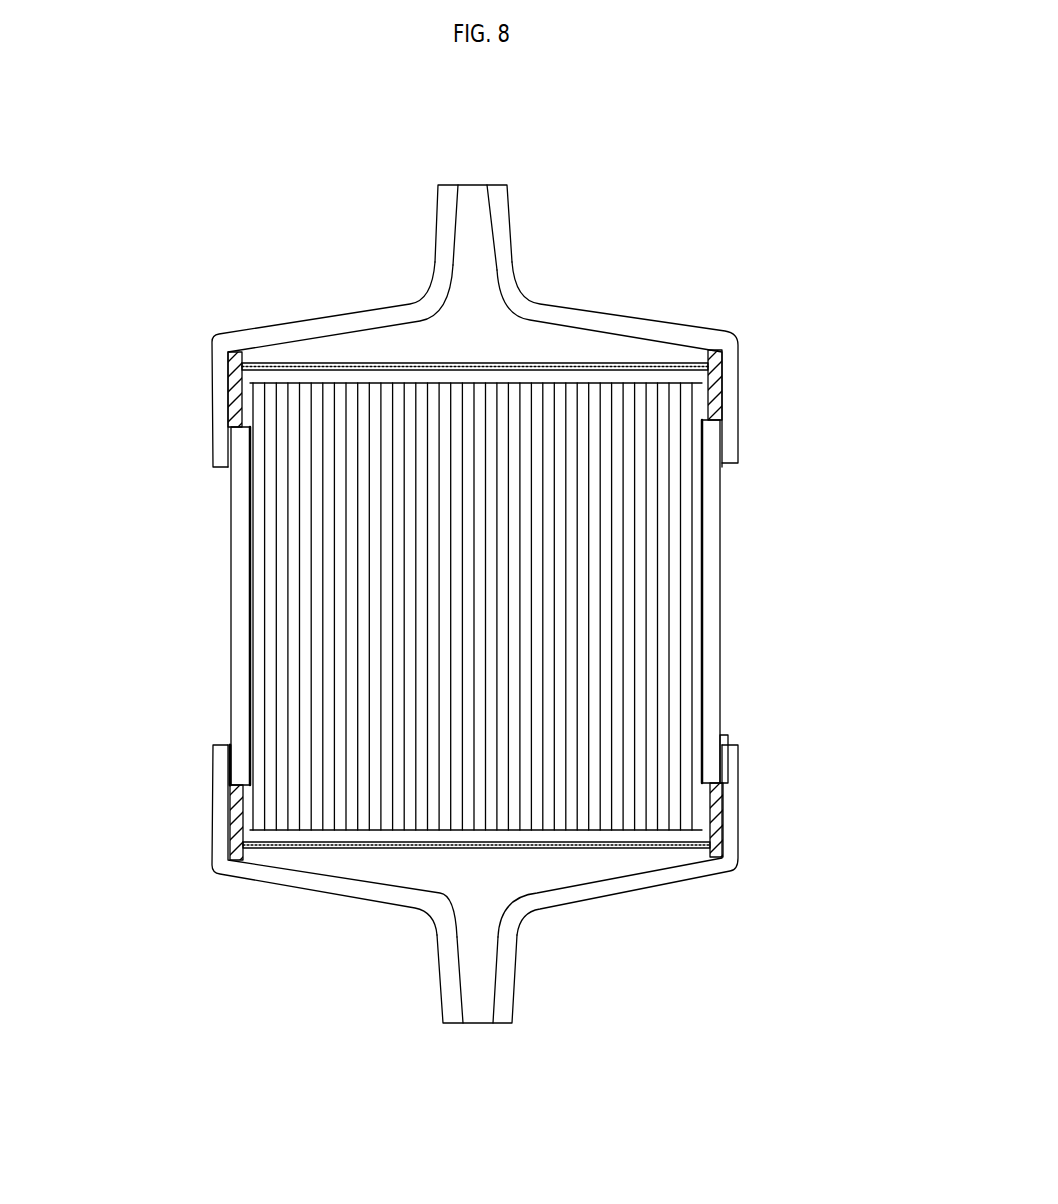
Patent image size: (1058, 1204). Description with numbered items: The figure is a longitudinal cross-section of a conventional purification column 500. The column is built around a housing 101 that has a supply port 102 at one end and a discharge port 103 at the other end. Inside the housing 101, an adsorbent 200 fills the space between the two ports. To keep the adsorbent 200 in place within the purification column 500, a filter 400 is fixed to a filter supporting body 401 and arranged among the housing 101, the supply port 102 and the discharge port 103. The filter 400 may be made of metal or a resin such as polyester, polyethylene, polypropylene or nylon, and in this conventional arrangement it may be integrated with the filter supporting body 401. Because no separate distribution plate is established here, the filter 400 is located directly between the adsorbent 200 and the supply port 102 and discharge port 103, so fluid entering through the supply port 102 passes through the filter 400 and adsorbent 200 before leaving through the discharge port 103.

The purification column 500 is at (750, 245).
The supply port 102 is at (553, 300).
The discharge port 103 is at (438, 968).
The filter 400 is at (377, 366).
The filter supporting body 401 is at (710, 400).
The housing 101 is at (228, 683).
The adsorbent 200 is at (668, 645).